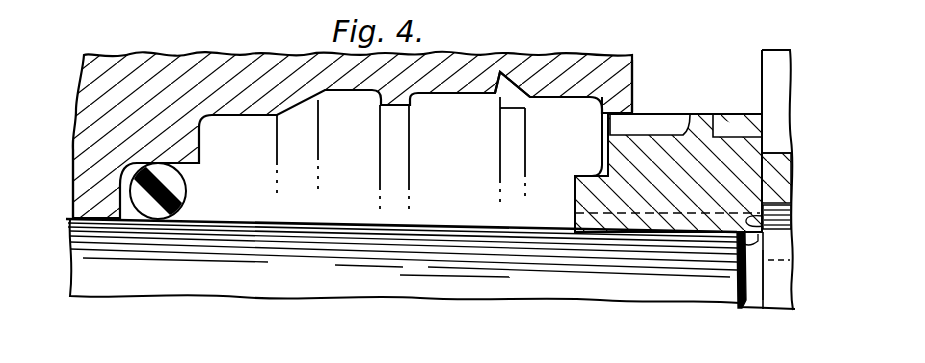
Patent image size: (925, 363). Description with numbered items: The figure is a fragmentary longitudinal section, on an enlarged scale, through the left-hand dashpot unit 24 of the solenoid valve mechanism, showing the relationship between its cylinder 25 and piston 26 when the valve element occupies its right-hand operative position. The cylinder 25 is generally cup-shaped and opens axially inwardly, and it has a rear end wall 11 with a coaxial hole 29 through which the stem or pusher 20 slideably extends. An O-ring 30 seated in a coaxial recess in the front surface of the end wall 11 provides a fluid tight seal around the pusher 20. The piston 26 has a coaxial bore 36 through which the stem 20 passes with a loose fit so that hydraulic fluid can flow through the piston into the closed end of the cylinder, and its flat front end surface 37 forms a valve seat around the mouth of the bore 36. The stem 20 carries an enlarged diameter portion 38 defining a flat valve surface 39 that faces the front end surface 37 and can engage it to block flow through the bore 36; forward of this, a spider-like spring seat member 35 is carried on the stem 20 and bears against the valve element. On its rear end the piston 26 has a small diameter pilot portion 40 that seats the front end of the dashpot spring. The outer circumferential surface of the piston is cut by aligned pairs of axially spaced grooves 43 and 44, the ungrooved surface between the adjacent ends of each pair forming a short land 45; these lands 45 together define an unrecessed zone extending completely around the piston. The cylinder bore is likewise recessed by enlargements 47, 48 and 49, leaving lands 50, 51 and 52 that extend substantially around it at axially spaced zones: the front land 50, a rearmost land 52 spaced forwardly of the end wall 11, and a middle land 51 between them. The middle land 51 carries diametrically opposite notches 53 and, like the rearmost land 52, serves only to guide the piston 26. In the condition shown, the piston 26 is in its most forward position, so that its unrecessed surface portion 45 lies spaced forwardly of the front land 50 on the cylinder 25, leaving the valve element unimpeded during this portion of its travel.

The rear end wall 11 is at (85, 192).
The stem or pusher 20 is at (490, 282).
The dashpot unit 24 is at (644, 68).
The cylinder 25 is at (197, 63).
The piston 26 is at (700, 215).
The coaxial hole 29 is at (90, 219).
The O-ring 30 is at (192, 195).
The spring seat member 35 is at (776, 68).
The coaxial bore 36 is at (633, 232).
The front end surface 37 is at (764, 145).
The enlarged diameter portion 38 is at (782, 269).
The valve surface 39 is at (792, 219).
The pilot portion 40 is at (575, 213).
The axially extending groove 43 is at (740, 128).
The axially extending groove 44 is at (636, 122).
The land 45 is at (710, 92).
The bore enlargement 47 is at (577, 98).
The bore enlargement 48 is at (452, 100).
The bore enlargement 49 is at (334, 108).
The front land 50 is at (604, 114).
The middle land 51 is at (512, 116).
The rearmost land 52 is at (383, 122).
The notch 53 is at (510, 90).